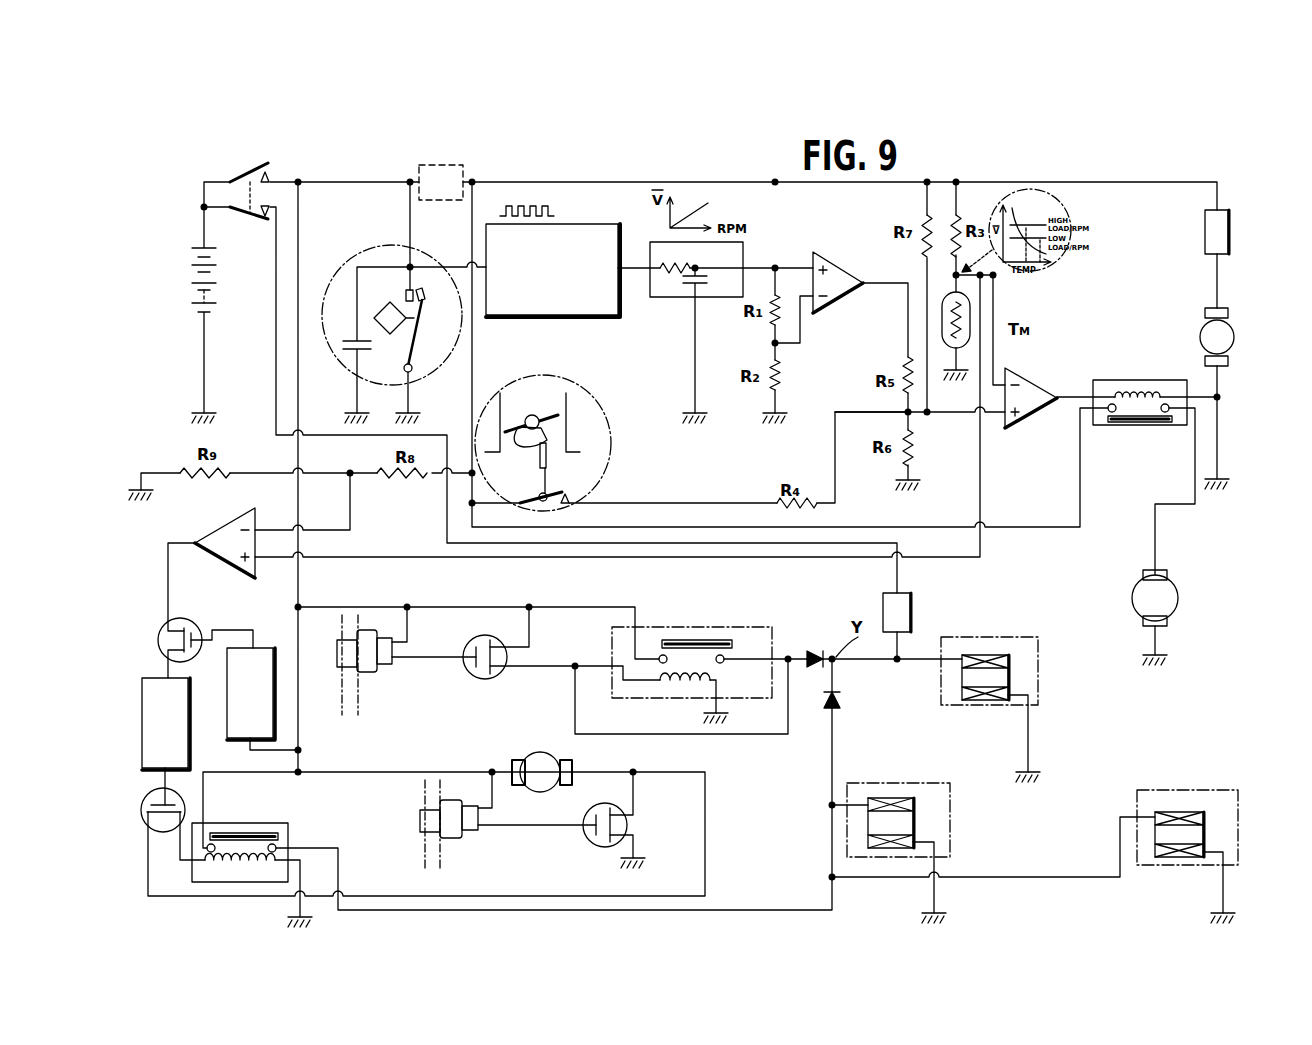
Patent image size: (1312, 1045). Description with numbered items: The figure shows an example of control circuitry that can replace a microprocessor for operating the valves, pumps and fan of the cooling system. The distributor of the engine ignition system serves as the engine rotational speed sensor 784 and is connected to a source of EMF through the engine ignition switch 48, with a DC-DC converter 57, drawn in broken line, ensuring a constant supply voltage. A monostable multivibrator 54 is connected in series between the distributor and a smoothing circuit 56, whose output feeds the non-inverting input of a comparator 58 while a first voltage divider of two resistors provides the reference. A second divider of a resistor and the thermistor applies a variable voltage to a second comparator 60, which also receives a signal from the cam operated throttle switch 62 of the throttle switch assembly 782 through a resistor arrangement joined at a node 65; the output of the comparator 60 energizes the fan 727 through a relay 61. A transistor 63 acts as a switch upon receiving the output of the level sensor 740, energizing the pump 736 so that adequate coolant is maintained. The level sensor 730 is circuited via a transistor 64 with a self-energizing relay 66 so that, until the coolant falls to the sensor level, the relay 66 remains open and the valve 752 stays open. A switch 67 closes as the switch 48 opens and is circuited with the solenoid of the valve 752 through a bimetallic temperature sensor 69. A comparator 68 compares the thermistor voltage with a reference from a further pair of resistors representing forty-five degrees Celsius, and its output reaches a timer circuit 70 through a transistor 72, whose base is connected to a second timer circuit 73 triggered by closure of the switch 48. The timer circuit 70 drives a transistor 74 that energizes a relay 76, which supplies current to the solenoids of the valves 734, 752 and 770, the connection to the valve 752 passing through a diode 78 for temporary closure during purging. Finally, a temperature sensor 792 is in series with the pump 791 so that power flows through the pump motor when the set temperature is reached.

The engine ignition switch 48 is at (240, 170).
The switch 67 is at (250, 222).
The engine rotational speed sensor 784 is at (342, 270).
The DC-DC converter 57 is at (447, 200).
The monostable multivibrator 54 is at (580, 316).
The smoothing circuit 56 is at (665, 298).
The comparator 58 is at (842, 305).
The cam operated throttle switch 782 is at (605, 399).
The cam operated throttle switch 62 is at (568, 498).
The junction 65 is at (915, 414).
The second comparator 60 is at (1030, 428).
The relay 61 is at (1170, 380).
The pump 791 is at (1232, 340).
The temperature sensor 792 is at (1230, 236).
The fan 727 is at (1178, 605).
The self-energizing relay 66 is at (746, 627).
The temperature sensor 69 is at (880, 610).
The valve 752 is at (954, 637).
The diode 78 is at (846, 706).
The comparator 68 is at (223, 530).
The transistor 72 is at (165, 627).
The second timer circuit 73 is at (265, 648).
The timer circuit 70 is at (148, 678).
The transistor 74 is at (148, 805).
The relay 76 is at (274, 826).
The level sensor 730 is at (343, 642).
The transistor 64 is at (464, 647).
The pump 736 is at (537, 751).
The level sensor 740 is at (428, 812).
The transistor 63 is at (630, 828).
The valve 734 is at (950, 816).
The valve 770 is at (1195, 790).